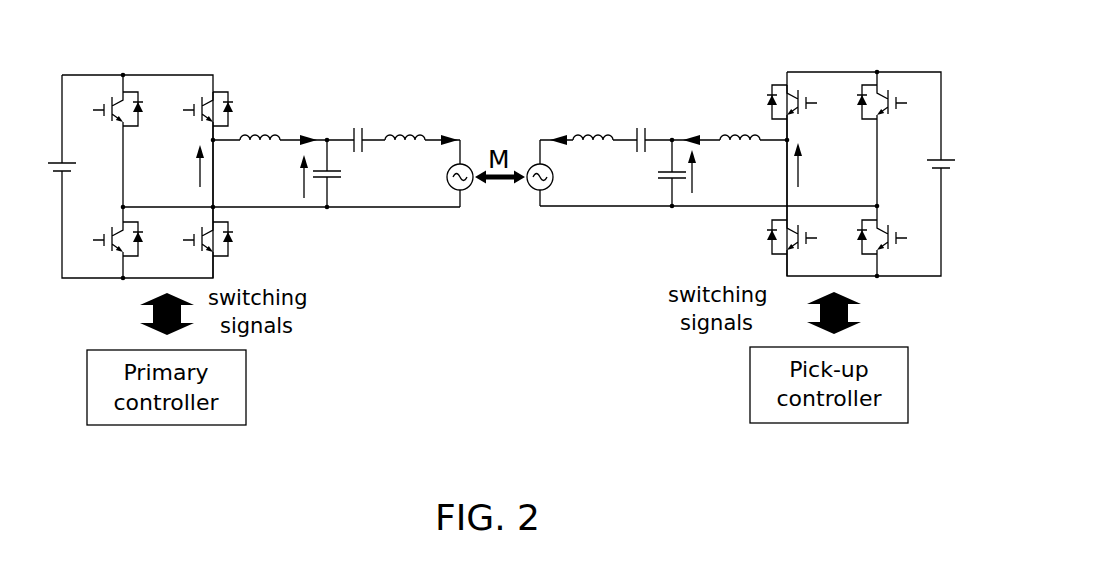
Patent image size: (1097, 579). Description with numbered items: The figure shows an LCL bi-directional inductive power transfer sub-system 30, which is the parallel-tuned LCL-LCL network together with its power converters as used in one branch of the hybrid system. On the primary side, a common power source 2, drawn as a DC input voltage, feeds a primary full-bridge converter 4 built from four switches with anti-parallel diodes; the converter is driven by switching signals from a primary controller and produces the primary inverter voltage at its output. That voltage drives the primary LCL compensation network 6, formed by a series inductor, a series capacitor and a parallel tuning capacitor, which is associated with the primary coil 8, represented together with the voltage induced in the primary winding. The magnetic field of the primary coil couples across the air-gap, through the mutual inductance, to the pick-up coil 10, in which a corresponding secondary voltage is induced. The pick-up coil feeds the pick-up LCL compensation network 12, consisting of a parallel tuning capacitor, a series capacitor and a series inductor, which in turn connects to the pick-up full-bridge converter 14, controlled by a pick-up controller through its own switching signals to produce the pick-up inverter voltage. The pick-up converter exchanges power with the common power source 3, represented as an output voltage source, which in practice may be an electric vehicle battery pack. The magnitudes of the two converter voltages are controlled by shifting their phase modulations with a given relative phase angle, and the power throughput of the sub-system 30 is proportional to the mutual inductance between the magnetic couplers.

The common power source 2 is at (52, 145).
The common power source 3 is at (948, 139).
The first converter 4 is at (167, 87).
The first compensation network 6 is at (315, 95).
The first coil 8 is at (471, 145).
The first coil 10 is at (526, 213).
The first compensation network 12 is at (666, 109).
The first converter 14 is at (823, 83).
The LCL sub-system 30 is at (911, 47).